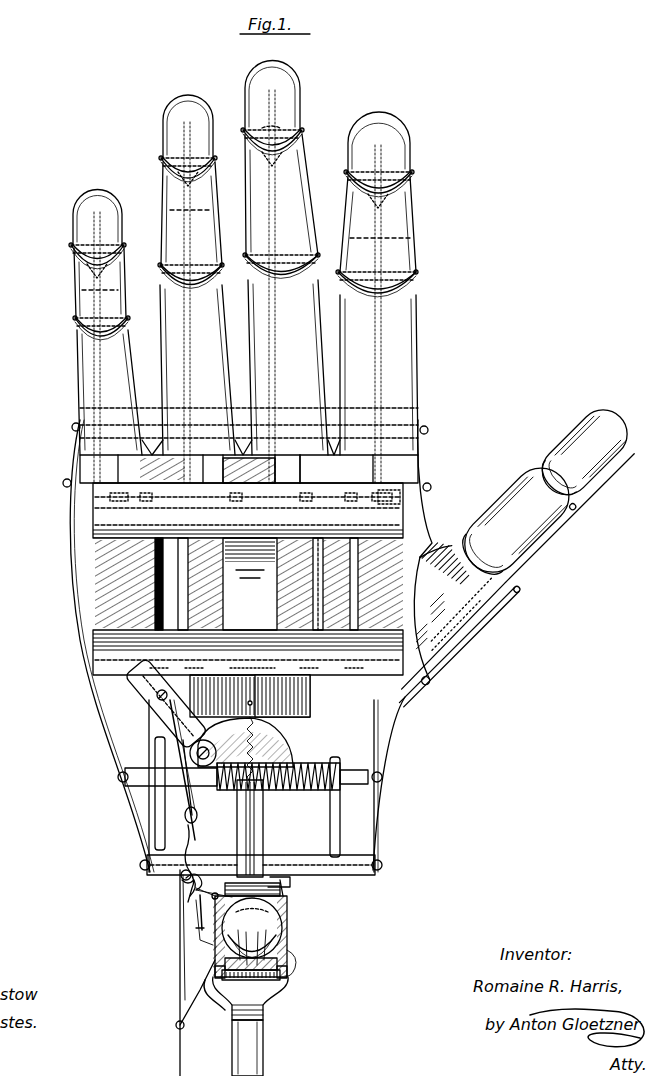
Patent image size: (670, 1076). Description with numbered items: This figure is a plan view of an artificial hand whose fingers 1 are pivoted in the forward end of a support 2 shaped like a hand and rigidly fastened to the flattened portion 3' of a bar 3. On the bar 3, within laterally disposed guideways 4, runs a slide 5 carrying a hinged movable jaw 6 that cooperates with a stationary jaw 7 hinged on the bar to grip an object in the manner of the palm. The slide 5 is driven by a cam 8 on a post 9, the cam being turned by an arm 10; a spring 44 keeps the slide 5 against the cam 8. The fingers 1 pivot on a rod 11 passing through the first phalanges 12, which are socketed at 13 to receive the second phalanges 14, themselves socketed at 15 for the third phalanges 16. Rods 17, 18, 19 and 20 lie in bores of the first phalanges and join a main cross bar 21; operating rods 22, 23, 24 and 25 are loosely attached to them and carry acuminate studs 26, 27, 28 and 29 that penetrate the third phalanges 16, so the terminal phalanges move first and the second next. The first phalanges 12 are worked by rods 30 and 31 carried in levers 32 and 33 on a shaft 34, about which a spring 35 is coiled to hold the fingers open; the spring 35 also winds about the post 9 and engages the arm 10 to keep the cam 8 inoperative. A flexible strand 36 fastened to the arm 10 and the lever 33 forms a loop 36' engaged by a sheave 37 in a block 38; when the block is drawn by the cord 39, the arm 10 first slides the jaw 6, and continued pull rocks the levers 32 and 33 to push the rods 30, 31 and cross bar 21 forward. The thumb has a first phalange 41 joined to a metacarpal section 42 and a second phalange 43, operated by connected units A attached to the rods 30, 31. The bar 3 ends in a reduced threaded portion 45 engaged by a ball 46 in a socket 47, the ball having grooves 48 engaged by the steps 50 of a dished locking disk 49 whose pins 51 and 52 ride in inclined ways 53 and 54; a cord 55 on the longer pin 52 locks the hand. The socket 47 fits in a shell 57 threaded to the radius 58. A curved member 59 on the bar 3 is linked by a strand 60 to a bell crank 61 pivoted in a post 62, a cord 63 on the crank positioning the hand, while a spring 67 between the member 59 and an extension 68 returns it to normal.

The fingers 1 is at (416, 352).
The support 2 is at (426, 416).
The bar 3 is at (261, 828).
The flattened portion of the bar 3' is at (250, 584).
The guideways 4 is at (277, 553).
The slide 5 is at (310, 703).
The movable jaw 6 is at (248, 654).
The stationary jaw 7 is at (248, 510).
The cam 8 is at (357, 757).
The post 9 is at (205, 766).
The arm 10 is at (135, 688).
The rod 11 is at (432, 446).
The first phalanges 12 is at (428, 379).
The socket of the first phalanges 13 is at (130, 318).
The second phalanges 14 is at (166, 226).
The socket of the second phalanges 15 is at (200, 165).
The third phalanges 16 is at (165, 137).
The rod 17 is at (373, 468).
The rod 18 is at (305, 468).
The rod 19 is at (164, 469).
The rod 20 is at (85, 455).
The main cross bar 21 is at (50, 547).
The operating rod 22 is at (395, 238).
The operating rod 23 is at (290, 170).
The operating rod 24 is at (203, 210).
The operating rod 25 is at (88, 290).
The acuminate stud 26 is at (412, 205).
The acuminate stud 27 is at (268, 122).
The acuminate stud 28 is at (160, 180).
The acuminate stud 29 is at (78, 268).
The rod 30 is at (345, 607).
The rod 31 is at (150, 590).
The lever 32 is at (342, 796).
The lever 33 is at (175, 813).
The shaft 34 is at (382, 772).
The spring 35 is at (280, 780).
The flexible strand 36 is at (126, 793).
The loop of the flexible strand 36' is at (206, 787).
The sheave 37 is at (182, 822).
The block 38 is at (188, 810).
The cord 39 is at (180, 931).
The first phalange of the thumb 41 is at (518, 522).
The metacarpal section 42 is at (433, 611).
The second phalange of the thumb 43 is at (584, 452).
The spring 44 is at (262, 800).
The reduced threaded portion 45 is at (288, 918).
The ball 46 is at (270, 895).
The socket 47 is at (280, 938).
The grooves 48 is at (285, 955).
The locking means 49 is at (212, 960).
The concentric steps 50 is at (212, 946).
The pin 51 is at (218, 968).
The pin 52 is at (290, 968).
The inclined way 53 is at (210, 978).
The inclined way 54 is at (282, 988).
The operating cord 55 is at (295, 965).
The shell 57 is at (278, 1008).
The radius 58 is at (265, 1036).
The curved member 59 is at (265, 864).
The flexible strand 60 is at (237, 864).
The bell crank 61 is at (186, 882).
The post 62 is at (200, 906).
The cord 63 is at (198, 916).
The spring 67 is at (290, 880).
The extension 68 is at (292, 902).
The connected units A is at (432, 684).